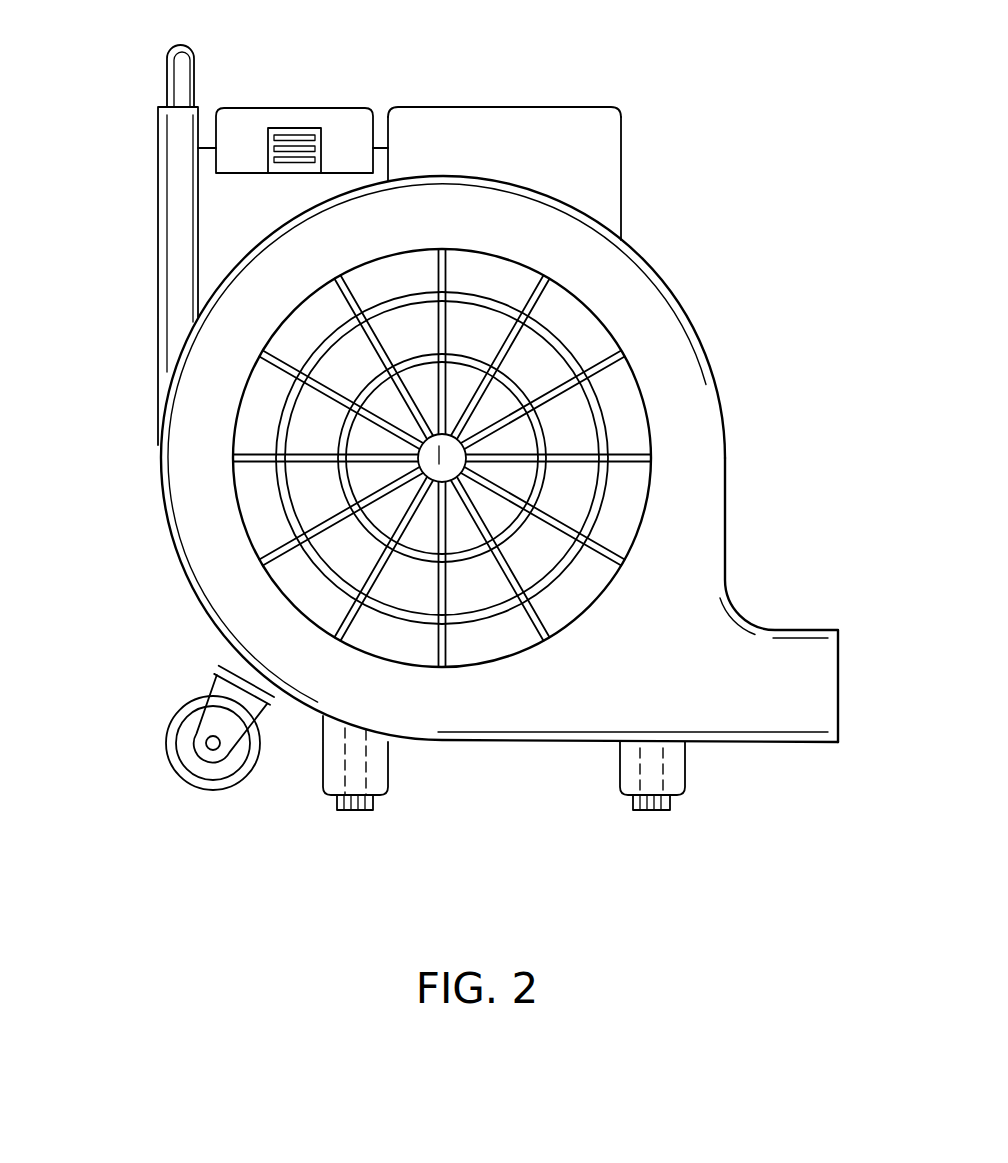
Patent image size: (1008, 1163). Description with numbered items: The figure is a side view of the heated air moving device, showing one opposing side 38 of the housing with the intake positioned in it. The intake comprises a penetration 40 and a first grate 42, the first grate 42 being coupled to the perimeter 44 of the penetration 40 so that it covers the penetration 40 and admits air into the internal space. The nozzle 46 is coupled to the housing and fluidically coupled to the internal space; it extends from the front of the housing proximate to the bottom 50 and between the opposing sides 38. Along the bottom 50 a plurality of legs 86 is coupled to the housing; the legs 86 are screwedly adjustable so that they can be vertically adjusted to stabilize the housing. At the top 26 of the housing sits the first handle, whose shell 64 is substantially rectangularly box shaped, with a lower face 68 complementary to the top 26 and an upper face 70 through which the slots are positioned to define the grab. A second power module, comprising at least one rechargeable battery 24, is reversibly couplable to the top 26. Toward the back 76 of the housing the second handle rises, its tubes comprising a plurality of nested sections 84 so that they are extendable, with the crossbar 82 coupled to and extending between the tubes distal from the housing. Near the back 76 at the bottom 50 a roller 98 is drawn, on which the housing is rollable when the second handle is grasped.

The rechargeable battery 24 is at (273, 118).
The top 26 is at (430, 176).
The upper face 70 is at (478, 106).
The lower face 68 is at (500, 176).
The shell 64 is at (583, 130).
The nested sections 84 is at (168, 64).
The crossbar 82 is at (168, 193).
The back 76 is at (158, 453).
The opposing side 38 is at (186, 488).
The penetration 40 is at (262, 524).
The perimeter 44 is at (250, 543).
The first grate 42 is at (313, 562).
The caster wheel 98 is at (168, 753).
The legs 86 is at (388, 780).
The bottom 50 is at (507, 742).
The nozzle 46 is at (803, 652).